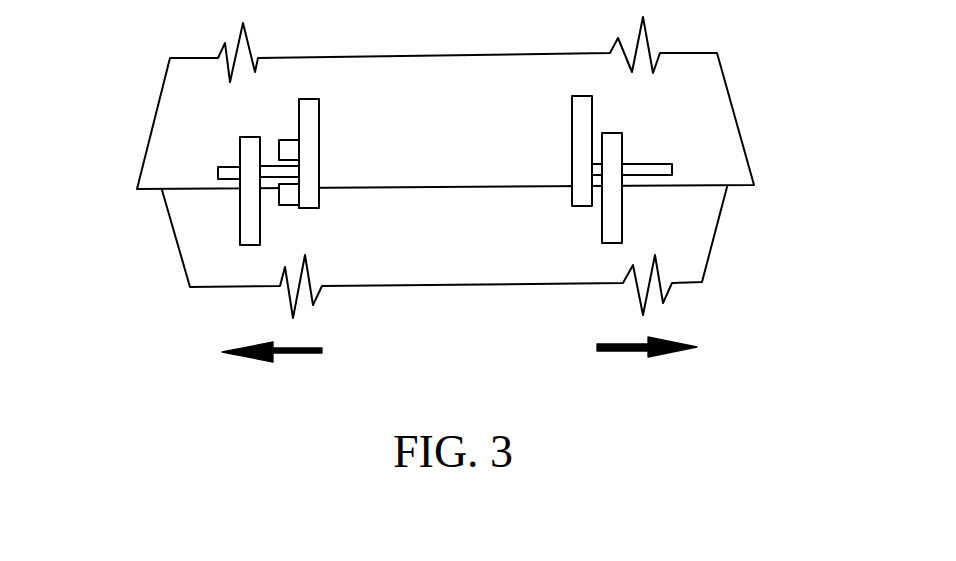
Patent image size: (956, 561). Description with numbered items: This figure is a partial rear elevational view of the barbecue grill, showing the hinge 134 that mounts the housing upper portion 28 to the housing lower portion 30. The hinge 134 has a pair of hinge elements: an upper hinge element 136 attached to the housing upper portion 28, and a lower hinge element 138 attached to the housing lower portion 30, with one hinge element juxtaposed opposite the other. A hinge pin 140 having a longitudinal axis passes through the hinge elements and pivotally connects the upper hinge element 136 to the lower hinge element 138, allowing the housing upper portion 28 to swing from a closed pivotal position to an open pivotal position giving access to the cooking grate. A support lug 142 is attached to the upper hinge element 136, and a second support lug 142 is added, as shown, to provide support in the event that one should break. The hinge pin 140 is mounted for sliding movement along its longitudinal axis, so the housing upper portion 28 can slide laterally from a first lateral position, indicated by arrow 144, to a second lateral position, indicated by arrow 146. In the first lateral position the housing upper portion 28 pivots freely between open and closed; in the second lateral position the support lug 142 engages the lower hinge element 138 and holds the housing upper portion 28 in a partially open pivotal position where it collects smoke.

The housing upper portion 28 is at (727, 88).
The housing lower portion 30 is at (715, 233).
The hinge 134 is at (319, 110).
The upper hinge element 136 is at (319, 148).
The lower hinge element 138 is at (240, 230).
The hinge pin 140 is at (218, 173).
The support lug 142 is at (285, 140).
The arrow 144 is at (617, 352).
The arrow 146 is at (285, 353).